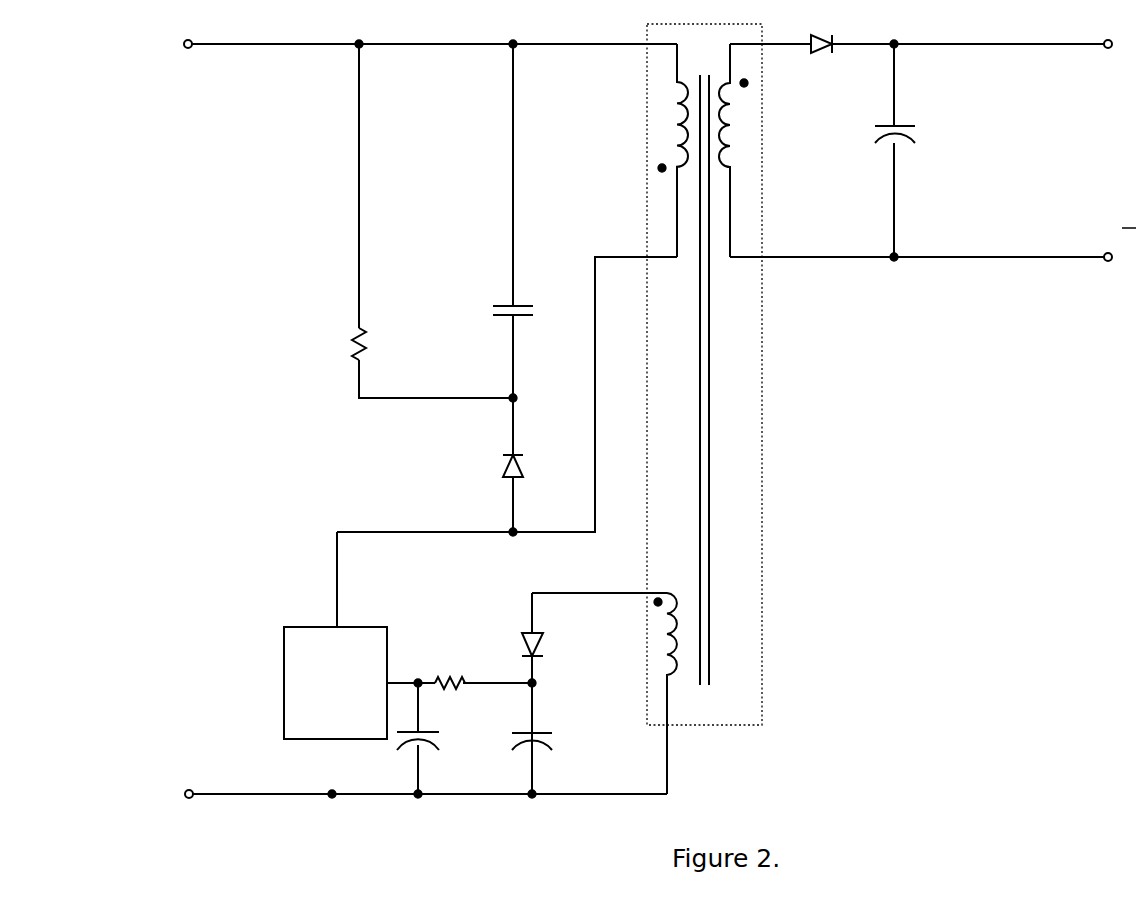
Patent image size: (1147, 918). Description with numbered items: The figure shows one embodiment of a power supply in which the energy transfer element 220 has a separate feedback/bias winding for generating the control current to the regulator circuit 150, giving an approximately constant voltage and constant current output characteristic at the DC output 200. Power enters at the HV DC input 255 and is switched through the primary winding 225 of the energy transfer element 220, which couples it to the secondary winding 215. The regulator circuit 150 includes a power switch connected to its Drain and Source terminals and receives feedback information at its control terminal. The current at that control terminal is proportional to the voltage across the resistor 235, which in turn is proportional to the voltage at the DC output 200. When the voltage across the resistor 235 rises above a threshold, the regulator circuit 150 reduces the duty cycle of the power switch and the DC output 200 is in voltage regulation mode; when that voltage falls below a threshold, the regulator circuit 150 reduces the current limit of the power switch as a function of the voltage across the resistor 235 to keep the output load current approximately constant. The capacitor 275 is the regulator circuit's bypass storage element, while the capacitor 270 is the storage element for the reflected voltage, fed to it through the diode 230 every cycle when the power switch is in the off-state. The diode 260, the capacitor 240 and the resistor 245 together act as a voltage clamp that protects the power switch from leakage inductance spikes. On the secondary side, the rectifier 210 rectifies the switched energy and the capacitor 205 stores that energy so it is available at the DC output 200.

The regulator circuit 150 is at (283, 682).
The DC output 200 is at (933, 150).
The capacitor 205 is at (880, 150).
The rectifier 210 is at (821, 65).
The secondary winding 215 is at (744, 140).
The energy transfer element 220 is at (773, 349).
The primary winding 225 is at (664, 130).
The diode 230 is at (553, 643).
The resistor 235 is at (436, 670).
The capacitor 240 is at (530, 300).
The resistor 245 is at (376, 342).
The HV DC input 255 is at (214, 419).
The diode 260 is at (496, 467).
The capacitor 270 is at (558, 737).
The capacitor 275 is at (446, 743).